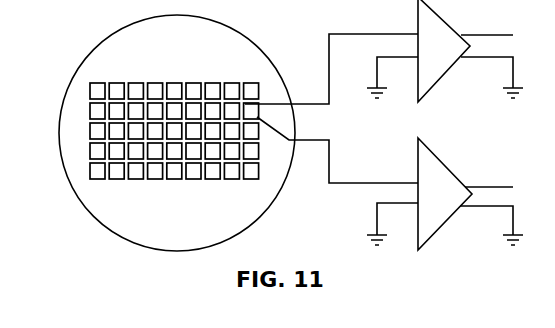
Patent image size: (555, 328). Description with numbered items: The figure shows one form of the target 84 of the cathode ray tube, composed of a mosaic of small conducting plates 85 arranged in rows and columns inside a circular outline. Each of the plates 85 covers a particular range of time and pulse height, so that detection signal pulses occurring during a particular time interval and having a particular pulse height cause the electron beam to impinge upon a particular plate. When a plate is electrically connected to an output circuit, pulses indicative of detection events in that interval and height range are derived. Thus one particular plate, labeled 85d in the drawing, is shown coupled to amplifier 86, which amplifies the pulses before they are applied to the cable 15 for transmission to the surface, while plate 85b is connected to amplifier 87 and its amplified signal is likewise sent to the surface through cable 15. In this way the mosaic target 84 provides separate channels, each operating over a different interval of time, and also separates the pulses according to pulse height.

The target 84 is at (89, 152).
The conducting plates 85 is at (113, 181).
The detector element 85d is at (236, 117).
The plate 85b is at (253, 115).
The amplifier 86 is at (441, 14).
The amplifier 87 is at (443, 225).
The cable 15 is at (482, 35).